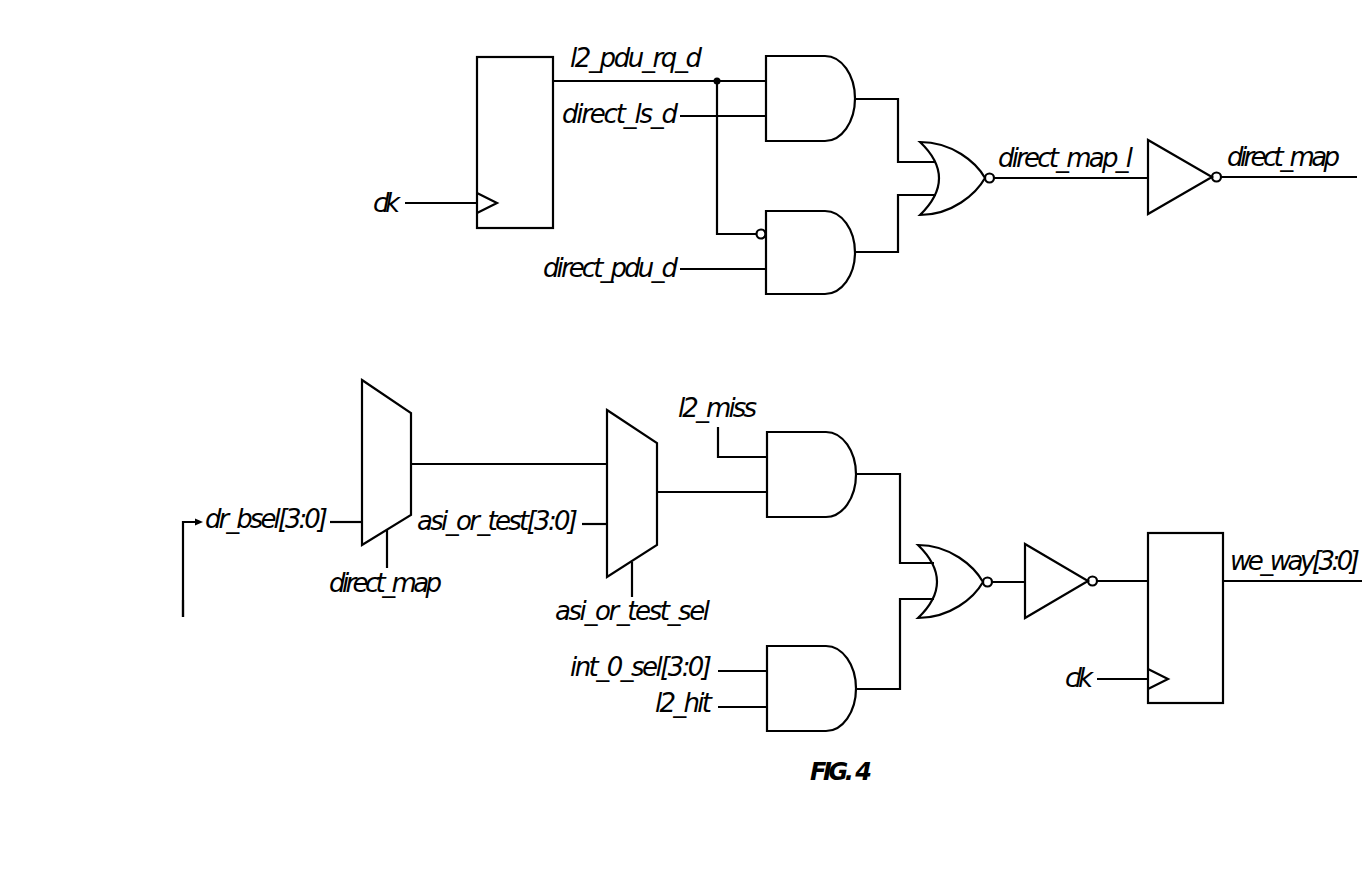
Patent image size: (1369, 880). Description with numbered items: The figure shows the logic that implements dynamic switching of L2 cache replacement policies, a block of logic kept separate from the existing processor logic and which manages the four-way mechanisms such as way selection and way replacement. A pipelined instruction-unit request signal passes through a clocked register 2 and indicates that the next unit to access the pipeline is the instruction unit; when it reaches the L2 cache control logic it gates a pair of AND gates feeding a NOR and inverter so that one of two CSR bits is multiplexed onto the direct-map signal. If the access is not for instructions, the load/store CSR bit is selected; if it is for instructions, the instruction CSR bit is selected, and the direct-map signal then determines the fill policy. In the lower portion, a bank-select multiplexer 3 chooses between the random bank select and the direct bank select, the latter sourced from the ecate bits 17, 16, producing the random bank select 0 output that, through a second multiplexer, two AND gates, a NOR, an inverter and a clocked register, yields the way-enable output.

The l2 pdu request pipeline register 2 is at (477, 82).
The random bank select multiplexer 3 is at (362, 403).
The rand_bsel 0 select output 0 is at (509, 446).
The l2_ecate[17:16] bank select source 17 is at (255, 586).
The l2_ecate[17:16] bank select source 16 is at (255, 640).